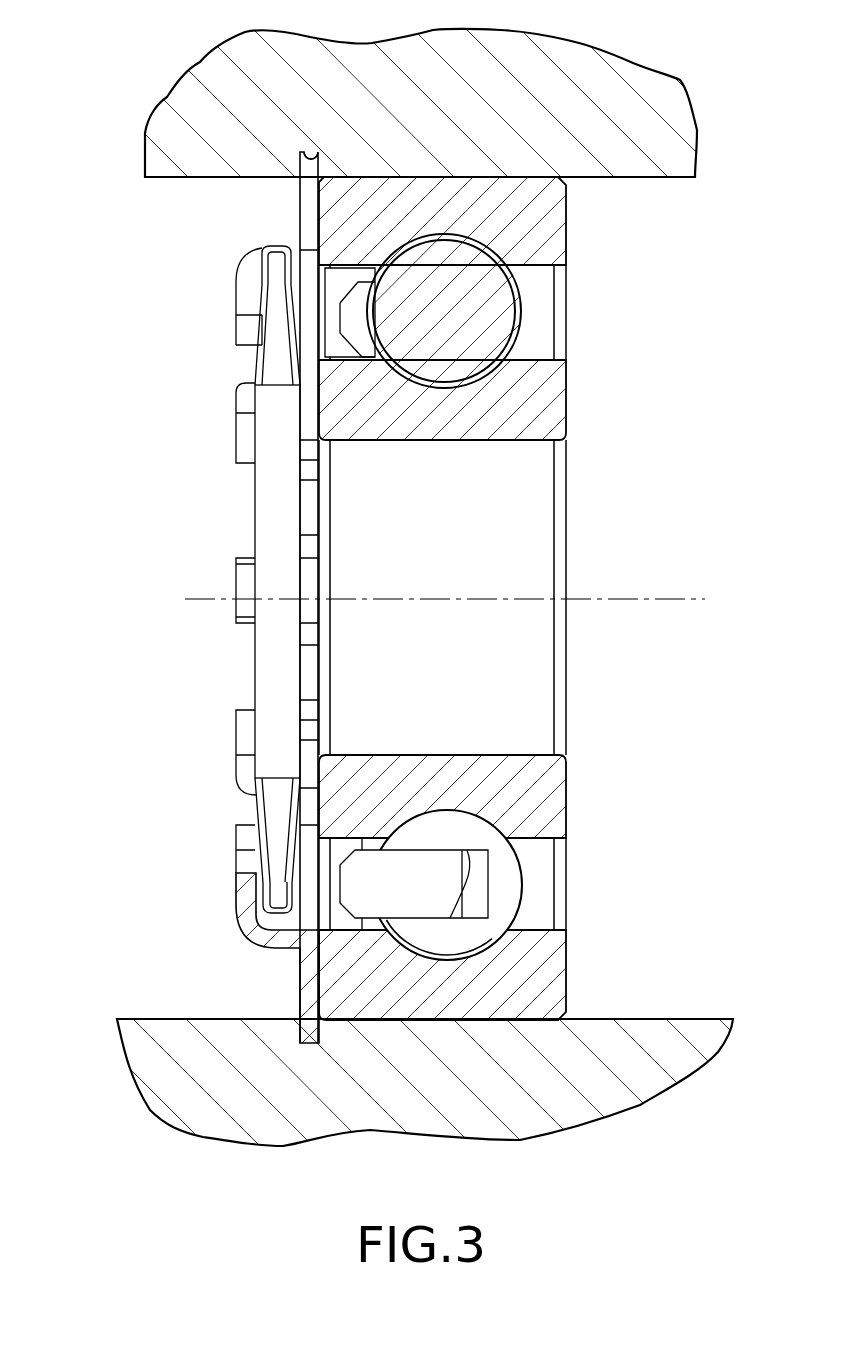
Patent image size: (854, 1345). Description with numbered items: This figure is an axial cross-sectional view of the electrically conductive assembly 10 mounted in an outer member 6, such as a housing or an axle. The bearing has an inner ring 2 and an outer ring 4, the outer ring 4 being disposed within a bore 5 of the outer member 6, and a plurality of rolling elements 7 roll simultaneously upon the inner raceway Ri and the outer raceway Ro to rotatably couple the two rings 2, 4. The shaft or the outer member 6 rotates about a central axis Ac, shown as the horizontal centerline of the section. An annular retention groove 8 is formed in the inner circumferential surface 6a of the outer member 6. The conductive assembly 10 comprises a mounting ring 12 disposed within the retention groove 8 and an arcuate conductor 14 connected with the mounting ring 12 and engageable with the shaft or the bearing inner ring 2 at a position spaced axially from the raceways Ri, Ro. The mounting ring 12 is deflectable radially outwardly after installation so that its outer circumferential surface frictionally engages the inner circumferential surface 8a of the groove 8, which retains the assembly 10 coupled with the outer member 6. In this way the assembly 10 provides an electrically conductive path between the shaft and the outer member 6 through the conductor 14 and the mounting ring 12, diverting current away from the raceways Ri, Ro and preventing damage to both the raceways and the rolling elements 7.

The inner ring 2 is at (555, 796).
The outer ring 4 is at (540, 973).
The bore 5 is at (622, 250).
The outer member 6 is at (678, 1021).
The inner circumferential surface 6a is at (650, 178).
The rolling elements 7 is at (510, 879).
The retention groove 8 is at (285, 1031).
The inner circumferential surface 8a is at (309, 156).
The electrically conductive assembly 10 is at (150, 373).
The mounting ring 12 is at (257, 205).
The arcuate conductor 14 is at (242, 803).
The central axis Ac is at (657, 598).
The outer raceway Ro is at (449, 248).
The inner raceway Ri is at (432, 378).